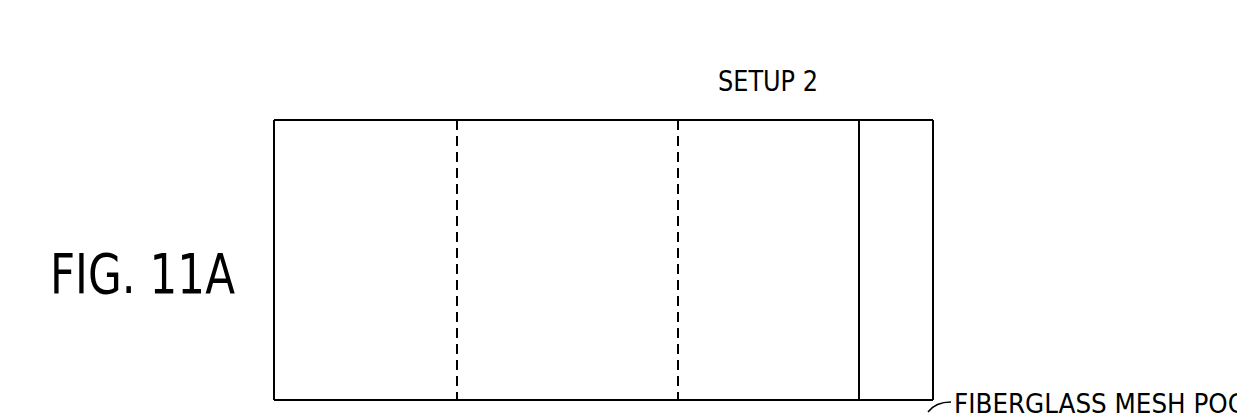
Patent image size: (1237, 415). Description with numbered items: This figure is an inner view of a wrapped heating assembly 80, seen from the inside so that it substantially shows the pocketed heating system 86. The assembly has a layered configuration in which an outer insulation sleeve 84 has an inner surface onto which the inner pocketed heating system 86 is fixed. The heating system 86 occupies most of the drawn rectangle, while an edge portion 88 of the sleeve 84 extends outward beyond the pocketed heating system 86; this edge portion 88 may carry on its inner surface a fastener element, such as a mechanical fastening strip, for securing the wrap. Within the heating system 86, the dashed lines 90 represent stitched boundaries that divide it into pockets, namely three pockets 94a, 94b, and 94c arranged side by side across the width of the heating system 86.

The wrapped heating assembly 80 is at (1108, 130).
The pocketed heating system 86 is at (515, 85).
The pocket 94a is at (327, 120).
The pocket 94b is at (563, 120).
The pocket 94c is at (829, 120).
The dashed lines 90 is at (456, 157).
The outer insulation sleeve 84 is at (933, 158).
The edge portion 88 is at (933, 270).